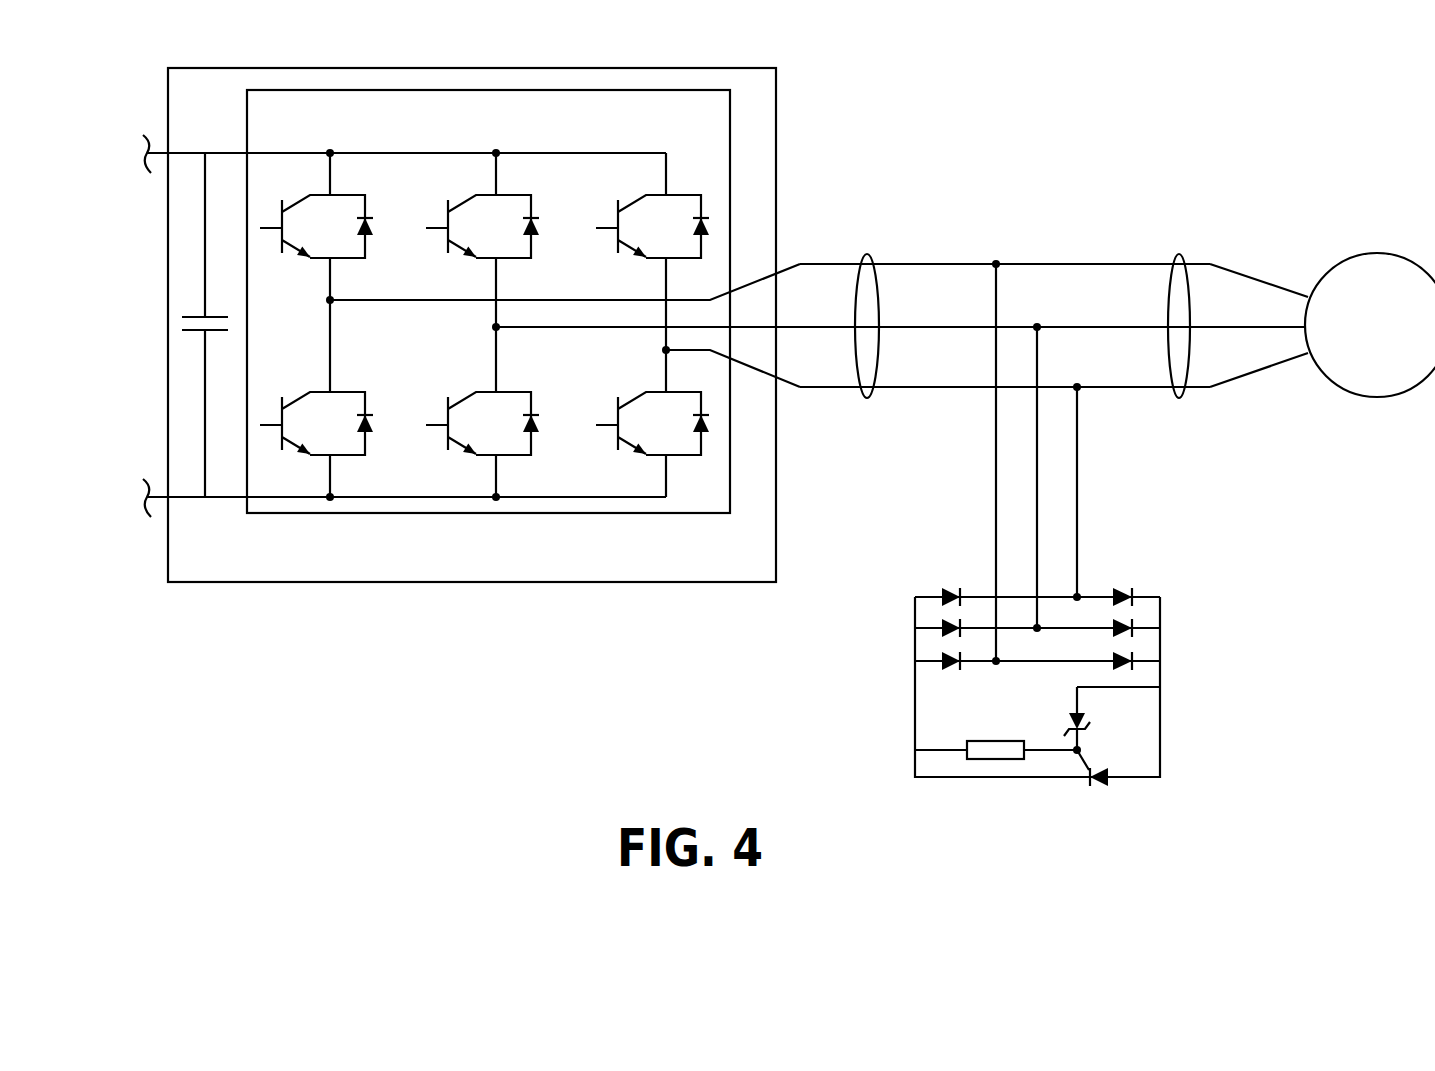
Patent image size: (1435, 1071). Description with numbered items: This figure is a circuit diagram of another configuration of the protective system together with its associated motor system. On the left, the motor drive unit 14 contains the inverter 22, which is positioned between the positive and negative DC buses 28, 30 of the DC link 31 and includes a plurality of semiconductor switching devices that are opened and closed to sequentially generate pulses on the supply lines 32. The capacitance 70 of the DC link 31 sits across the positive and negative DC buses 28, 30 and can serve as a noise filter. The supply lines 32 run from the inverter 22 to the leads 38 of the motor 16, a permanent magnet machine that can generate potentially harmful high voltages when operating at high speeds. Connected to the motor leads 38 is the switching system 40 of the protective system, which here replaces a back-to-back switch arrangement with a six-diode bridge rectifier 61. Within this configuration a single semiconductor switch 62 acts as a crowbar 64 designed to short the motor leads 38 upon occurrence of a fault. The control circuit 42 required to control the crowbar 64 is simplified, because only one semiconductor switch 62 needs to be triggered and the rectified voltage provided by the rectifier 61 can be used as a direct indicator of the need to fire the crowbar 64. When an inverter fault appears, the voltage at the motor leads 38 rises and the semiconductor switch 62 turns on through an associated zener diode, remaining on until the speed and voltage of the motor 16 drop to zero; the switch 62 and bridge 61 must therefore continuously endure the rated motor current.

The motor drive unit 14 is at (483, 583).
The motor 16 is at (1388, 352).
The inverter 22 is at (486, 89).
The positive DC bus 28 is at (176, 153).
The negative DC bus 30 is at (181, 498).
The DC link 31 is at (150, 112).
The supply lines 32 is at (866, 255).
The motor leads 38 is at (1180, 255).
The switching system 40 is at (1100, 815).
The control circuit 42 is at (978, 702).
The bridge rectifier 61 is at (1116, 558).
The semiconductor switch 62 is at (1097, 785).
The crowbar 64 is at (1190, 769).
The capacitance 70 is at (184, 346).